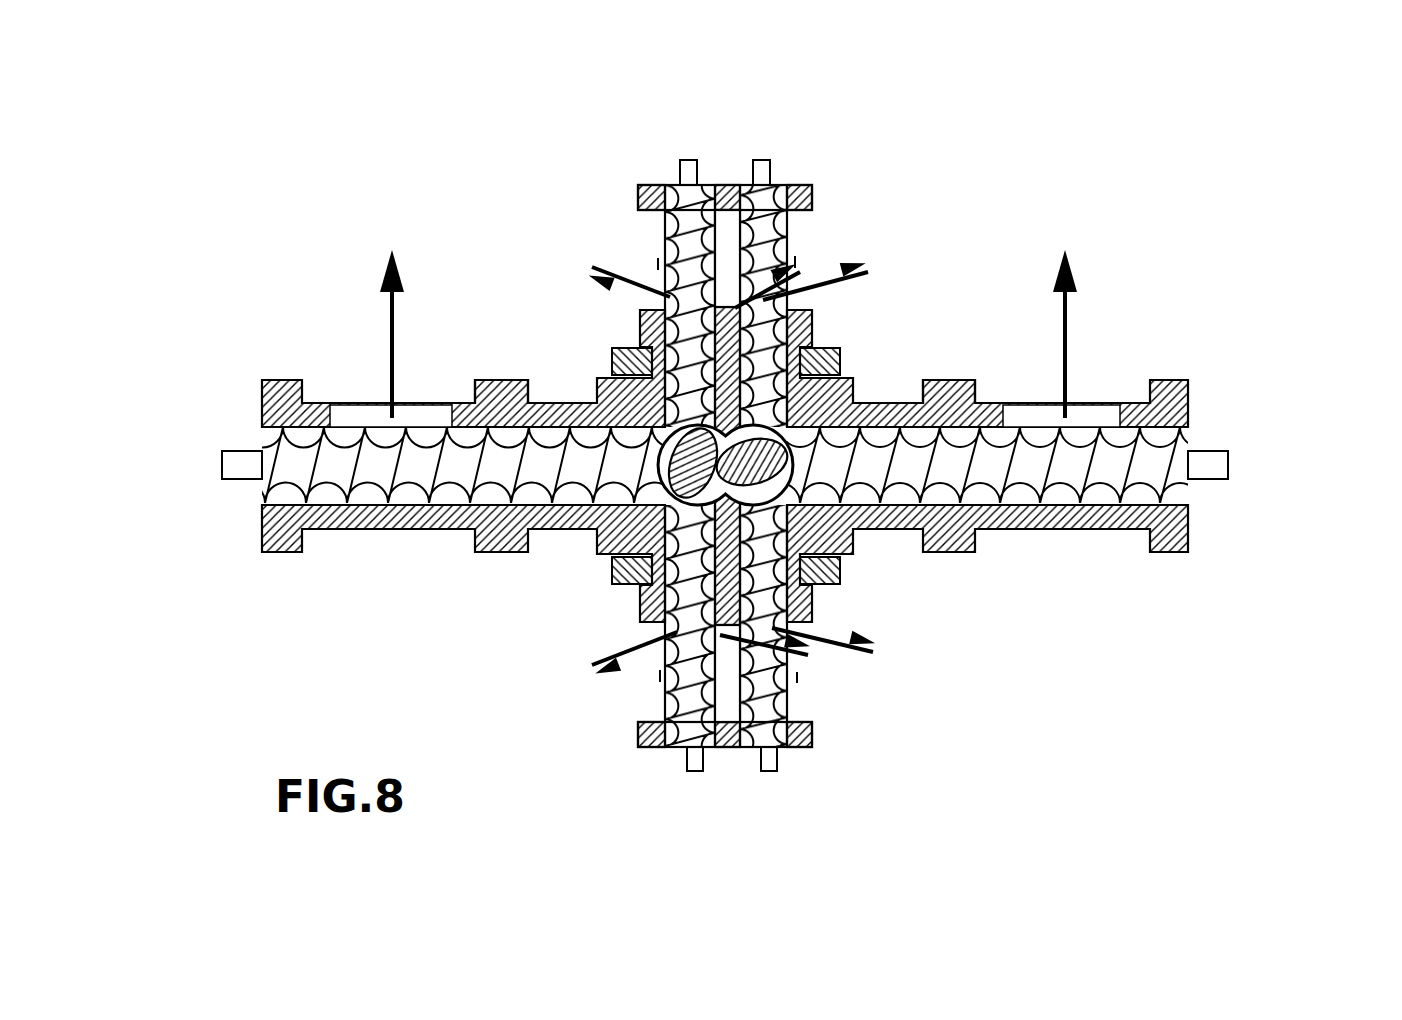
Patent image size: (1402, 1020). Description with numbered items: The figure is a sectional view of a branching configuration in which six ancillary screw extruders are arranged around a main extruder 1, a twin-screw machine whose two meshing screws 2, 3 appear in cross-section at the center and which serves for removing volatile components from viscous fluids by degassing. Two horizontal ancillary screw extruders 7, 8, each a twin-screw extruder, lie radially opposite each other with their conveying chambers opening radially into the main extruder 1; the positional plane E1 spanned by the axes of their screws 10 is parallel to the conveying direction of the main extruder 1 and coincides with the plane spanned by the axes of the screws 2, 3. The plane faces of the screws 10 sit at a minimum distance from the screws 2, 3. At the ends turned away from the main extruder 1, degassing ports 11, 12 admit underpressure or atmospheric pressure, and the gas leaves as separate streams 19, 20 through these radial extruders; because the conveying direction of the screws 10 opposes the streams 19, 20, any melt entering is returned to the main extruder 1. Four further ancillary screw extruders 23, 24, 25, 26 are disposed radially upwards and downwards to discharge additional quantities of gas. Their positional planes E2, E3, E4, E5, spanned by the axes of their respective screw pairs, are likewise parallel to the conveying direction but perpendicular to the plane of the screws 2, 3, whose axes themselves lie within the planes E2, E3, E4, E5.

The main extruder 1 is at (845, 372).
The screw 2 is at (692, 452).
The screw 3 is at (760, 455).
The ancillary screw extruder 7 is at (497, 378).
The ancillary screw extruder 8 is at (953, 378).
The screw 10 is at (417, 460).
The degassing port 11 is at (360, 417).
The degassing port 12 is at (656, 264).
The separate stream 19 is at (390, 312).
The separate stream 20 is at (1067, 312).
The ancillary screw extruder 23 is at (660, 235).
The ancillary screw extruder 24 is at (668, 700).
The ancillary screw extruder 25 is at (792, 235).
The ancillary screw extruder 26 is at (797, 700).
The positional plane E1 is at (1335, 465).
The positional plane E2 is at (688, 160).
The positional plane E3 is at (695, 771).
The positional plane E4 is at (762, 160).
The positional plane E5 is at (769, 771).